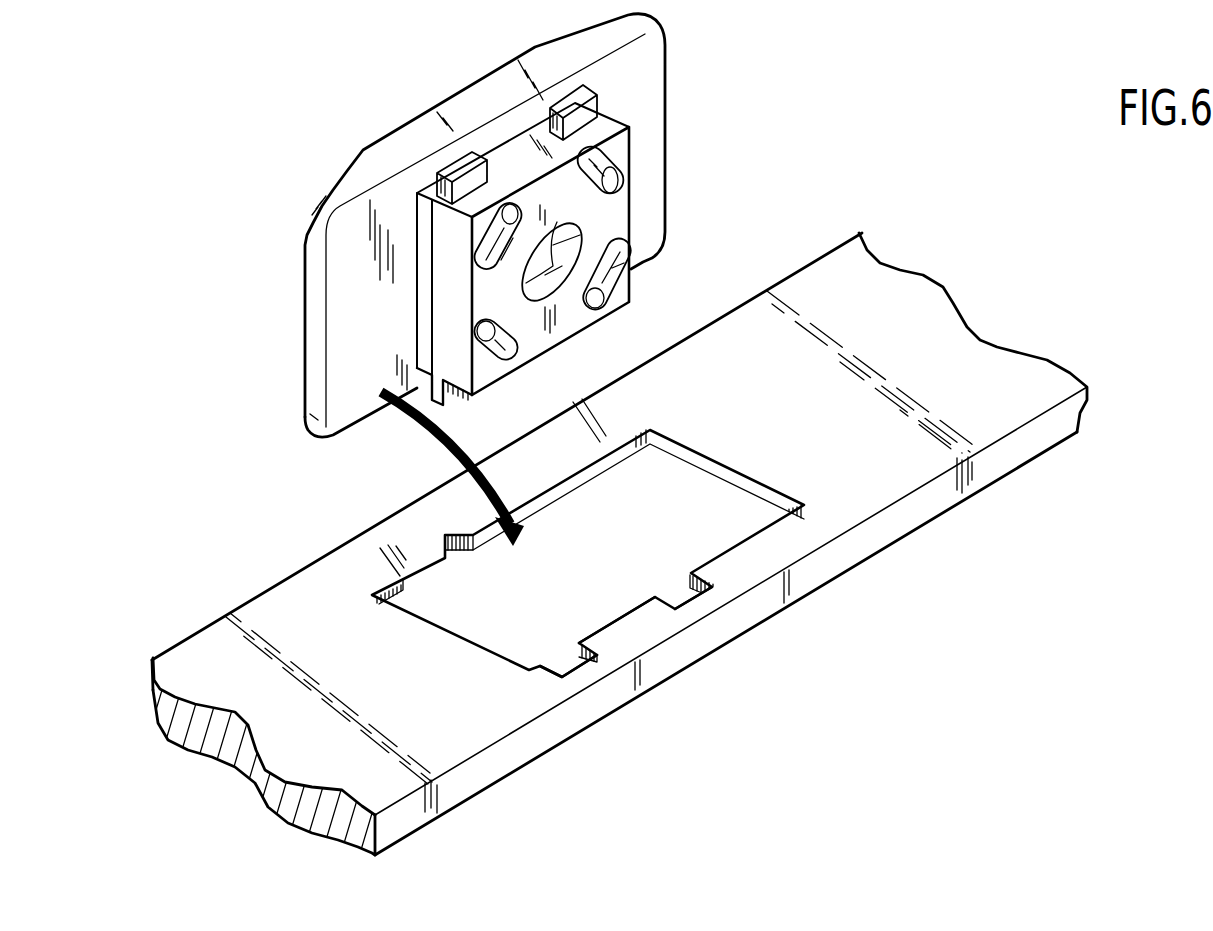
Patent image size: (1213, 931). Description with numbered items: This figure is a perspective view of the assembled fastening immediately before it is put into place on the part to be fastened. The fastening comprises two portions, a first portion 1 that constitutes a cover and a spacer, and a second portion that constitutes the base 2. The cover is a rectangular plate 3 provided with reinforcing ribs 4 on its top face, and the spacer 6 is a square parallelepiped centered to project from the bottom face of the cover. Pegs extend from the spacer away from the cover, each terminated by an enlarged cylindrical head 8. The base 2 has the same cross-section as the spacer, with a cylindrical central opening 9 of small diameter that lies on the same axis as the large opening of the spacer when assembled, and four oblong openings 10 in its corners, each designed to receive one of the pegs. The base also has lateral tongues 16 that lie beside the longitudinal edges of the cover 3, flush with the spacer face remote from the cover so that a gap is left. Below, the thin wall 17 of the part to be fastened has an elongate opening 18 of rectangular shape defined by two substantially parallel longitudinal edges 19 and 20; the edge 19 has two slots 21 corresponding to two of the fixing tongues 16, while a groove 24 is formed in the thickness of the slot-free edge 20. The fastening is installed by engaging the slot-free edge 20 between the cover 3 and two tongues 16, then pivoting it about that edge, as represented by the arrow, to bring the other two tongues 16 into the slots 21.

The first portion 1 is at (273, 250).
The base 2 is at (613, 220).
The rectangular plate 3 is at (643, 148).
The reinforcing ribs 4 is at (502, 101).
The spacer 6 is at (425, 283).
The enlarged cylindrical head 8 is at (515, 214).
The cylindrical central opening 9 is at (568, 308).
The oblong openings 10 is at (540, 262).
The lateral tongues 16 is at (598, 113).
The thin wall 17 is at (932, 343).
The elongate opening 18 is at (680, 500).
The longitudinal edge 19 is at (620, 618).
The slot-free edge 20 is at (410, 588).
The slots 21 is at (688, 592).
The groove 24 is at (460, 567).